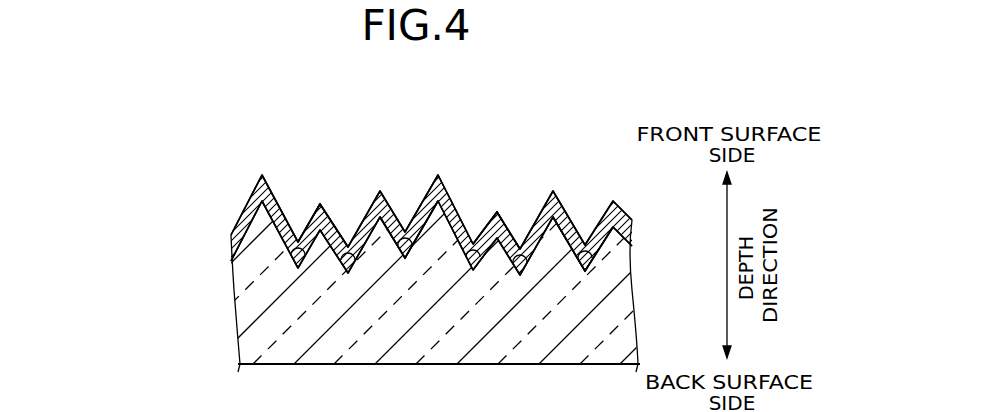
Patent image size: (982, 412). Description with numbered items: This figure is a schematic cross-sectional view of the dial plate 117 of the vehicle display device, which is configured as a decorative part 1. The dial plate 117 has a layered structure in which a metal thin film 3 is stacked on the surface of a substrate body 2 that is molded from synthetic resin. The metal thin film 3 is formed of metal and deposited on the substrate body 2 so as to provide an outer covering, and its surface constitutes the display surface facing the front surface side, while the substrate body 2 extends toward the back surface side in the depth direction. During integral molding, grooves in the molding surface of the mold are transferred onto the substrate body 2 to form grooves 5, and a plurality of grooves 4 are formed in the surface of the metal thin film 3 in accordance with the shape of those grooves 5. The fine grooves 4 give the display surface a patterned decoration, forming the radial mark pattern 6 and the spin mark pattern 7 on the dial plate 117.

The dial plate 117 is at (167, 180).
The decorative part 1 is at (167, 300).
The substrate body 2 is at (243, 309).
The metal thin film 3 is at (257, 176).
The groove 4 is at (357, 364).
The groove 5 is at (408, 252).
The radial mark pattern 6 is at (409, 125).
The spin mark pattern 7 is at (409, 125).